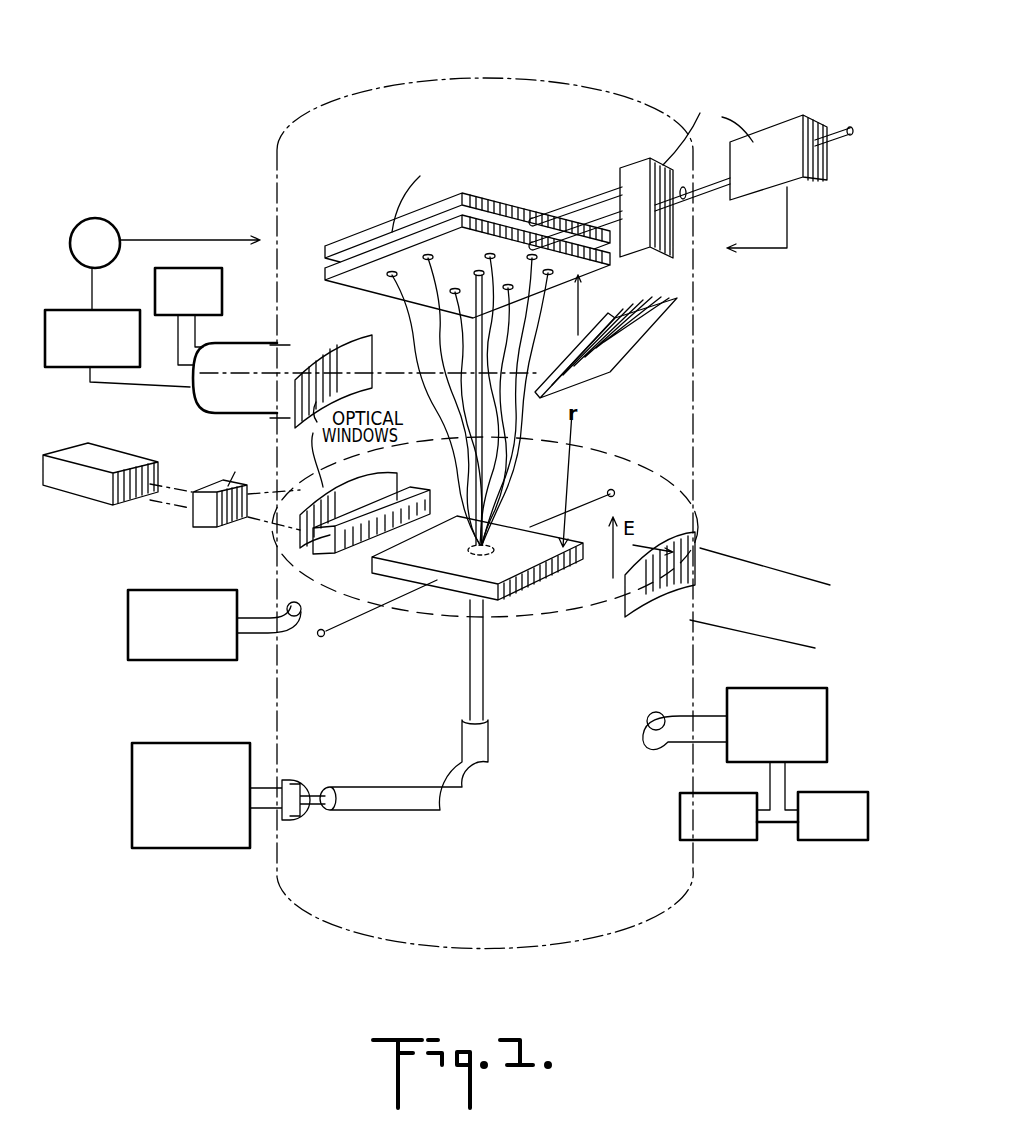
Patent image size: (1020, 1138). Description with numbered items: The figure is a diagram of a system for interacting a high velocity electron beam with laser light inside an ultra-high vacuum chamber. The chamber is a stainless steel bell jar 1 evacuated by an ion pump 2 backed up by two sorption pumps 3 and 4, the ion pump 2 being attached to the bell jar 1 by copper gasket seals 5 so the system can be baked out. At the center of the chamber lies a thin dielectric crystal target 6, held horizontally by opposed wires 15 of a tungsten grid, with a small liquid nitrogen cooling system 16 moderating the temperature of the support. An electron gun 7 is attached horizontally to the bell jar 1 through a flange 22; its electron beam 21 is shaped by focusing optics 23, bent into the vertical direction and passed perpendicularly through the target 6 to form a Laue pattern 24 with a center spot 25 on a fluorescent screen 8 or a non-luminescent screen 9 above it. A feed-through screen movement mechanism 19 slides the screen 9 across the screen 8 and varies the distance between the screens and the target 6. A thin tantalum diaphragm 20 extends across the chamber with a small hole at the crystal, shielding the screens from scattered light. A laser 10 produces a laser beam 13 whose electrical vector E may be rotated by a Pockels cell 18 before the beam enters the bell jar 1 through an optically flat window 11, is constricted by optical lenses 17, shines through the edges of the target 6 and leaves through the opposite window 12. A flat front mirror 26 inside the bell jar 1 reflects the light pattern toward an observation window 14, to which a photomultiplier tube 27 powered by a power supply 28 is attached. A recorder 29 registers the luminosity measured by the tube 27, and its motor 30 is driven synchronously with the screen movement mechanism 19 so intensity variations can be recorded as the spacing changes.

The bell jar 1 is at (340, 103).
The ion pump 2 is at (828, 707).
The sorption pump 3 is at (713, 842).
The sorption pump 4 is at (822, 842).
The copper gasket seals 5 is at (645, 728).
The target 6 is at (520, 598).
The electron gun 7 is at (186, 848).
The fluorescent screen 8 is at (333, 250).
The non-luminescent screen 9 is at (335, 280).
The laser 10 is at (75, 498).
The optically flat window 11 is at (395, 475).
The optically flat window 12 is at (650, 603).
The laser beam 13 is at (730, 574).
The optical window 14 is at (350, 346).
The opposed wires 15 is at (348, 630).
The liquid nitrogen cooling system 16 is at (127, 625).
The optical lenses 17 is at (322, 547).
The Pockels cell 18 is at (192, 516).
The screen movement mechanism 19 is at (736, 150).
The diaphragm 20 is at (660, 481).
The electron beam 21 is at (484, 693).
The flange 22 is at (290, 783).
The focusing optics 23 is at (463, 797).
The Laue pattern 24 is at (566, 300).
The center spot 25 is at (476, 272).
The mirror 26 is at (587, 374).
The photomultiplier tube 27 is at (248, 349).
The power supply 28 is at (222, 288).
The recorder 29 is at (62, 358).
The motor 30 is at (100, 232).